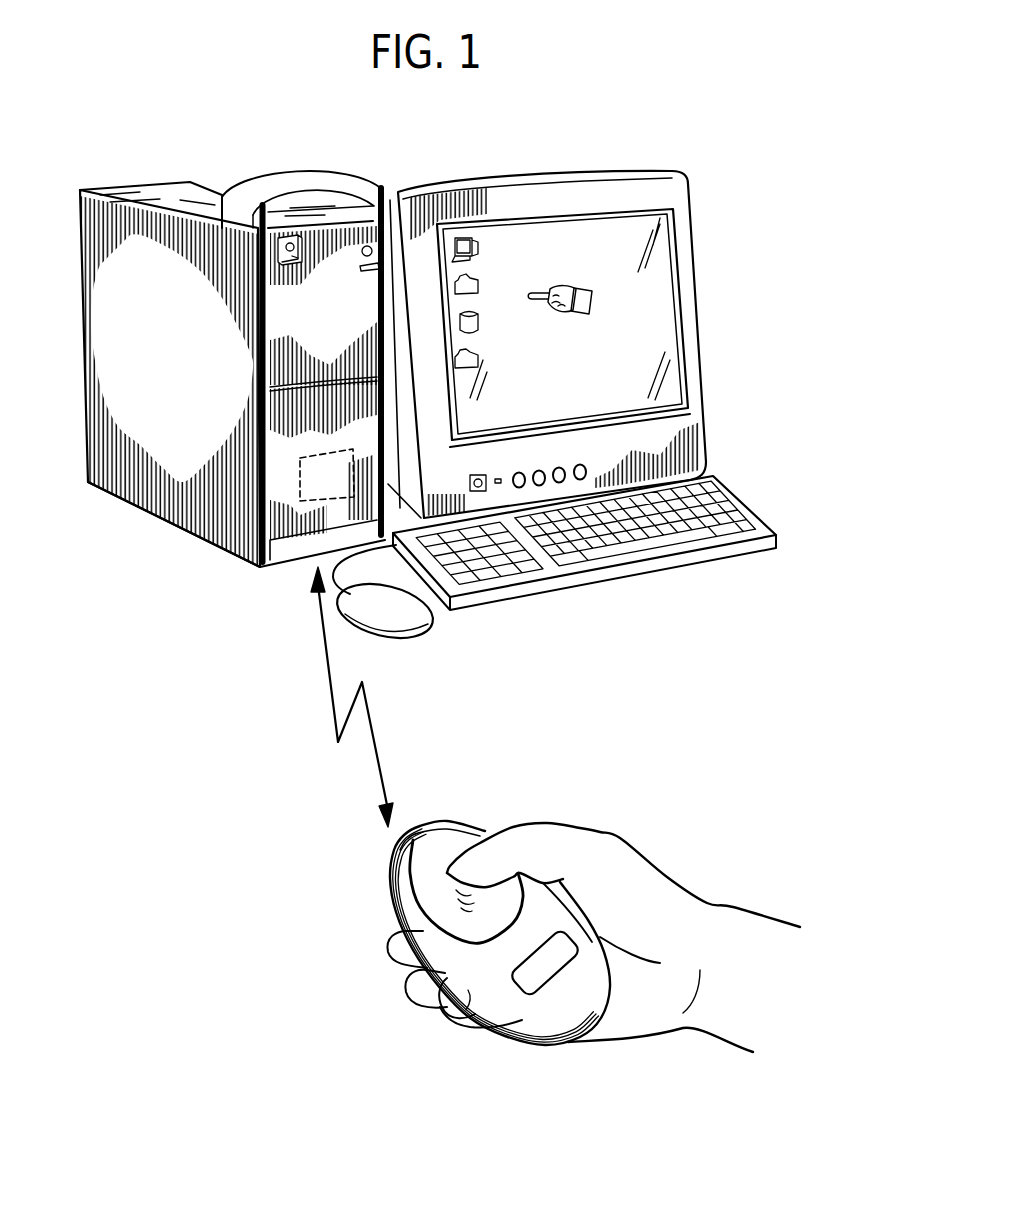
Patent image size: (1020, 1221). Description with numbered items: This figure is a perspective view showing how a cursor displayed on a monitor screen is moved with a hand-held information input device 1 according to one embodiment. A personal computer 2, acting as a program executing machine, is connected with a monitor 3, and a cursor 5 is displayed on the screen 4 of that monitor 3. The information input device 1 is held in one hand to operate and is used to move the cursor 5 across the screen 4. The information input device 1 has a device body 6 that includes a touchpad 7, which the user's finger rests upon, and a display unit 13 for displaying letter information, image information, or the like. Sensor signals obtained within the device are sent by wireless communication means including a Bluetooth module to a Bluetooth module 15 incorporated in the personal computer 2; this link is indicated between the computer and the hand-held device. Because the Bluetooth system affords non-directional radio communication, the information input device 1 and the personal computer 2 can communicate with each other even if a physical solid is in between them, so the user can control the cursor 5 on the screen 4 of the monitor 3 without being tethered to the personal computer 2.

The information input device 1 is at (486, 933).
The personal computer 2 is at (232, 383).
The monitor 3 is at (588, 301).
The screen 4 is at (652, 378).
The cursor 5 is at (588, 290).
The device body 6 is at (392, 888).
The touchpad 7 is at (440, 862).
The display unit 13 is at (526, 980).
The Bluetooth module 15 is at (312, 503).